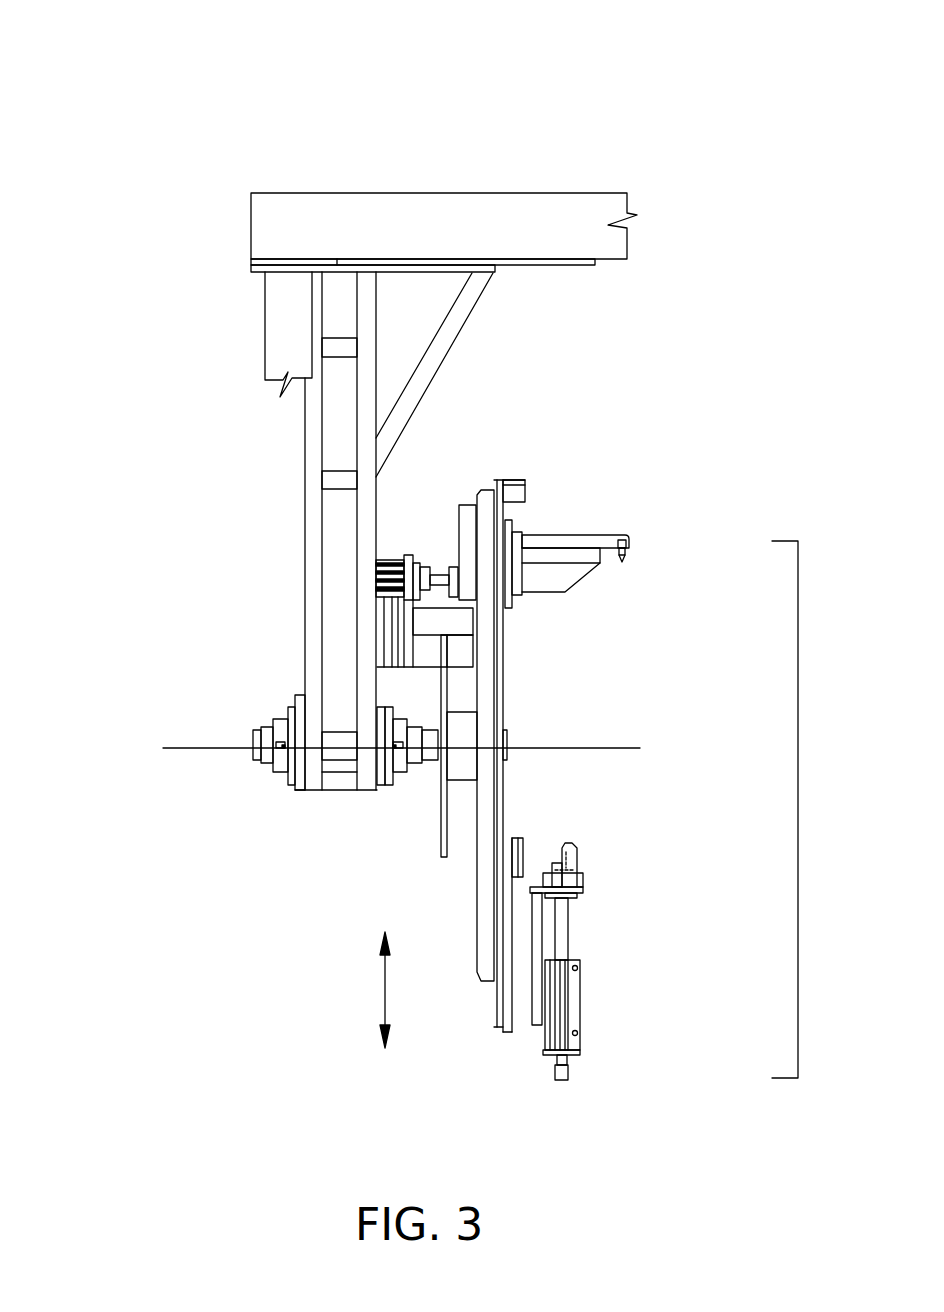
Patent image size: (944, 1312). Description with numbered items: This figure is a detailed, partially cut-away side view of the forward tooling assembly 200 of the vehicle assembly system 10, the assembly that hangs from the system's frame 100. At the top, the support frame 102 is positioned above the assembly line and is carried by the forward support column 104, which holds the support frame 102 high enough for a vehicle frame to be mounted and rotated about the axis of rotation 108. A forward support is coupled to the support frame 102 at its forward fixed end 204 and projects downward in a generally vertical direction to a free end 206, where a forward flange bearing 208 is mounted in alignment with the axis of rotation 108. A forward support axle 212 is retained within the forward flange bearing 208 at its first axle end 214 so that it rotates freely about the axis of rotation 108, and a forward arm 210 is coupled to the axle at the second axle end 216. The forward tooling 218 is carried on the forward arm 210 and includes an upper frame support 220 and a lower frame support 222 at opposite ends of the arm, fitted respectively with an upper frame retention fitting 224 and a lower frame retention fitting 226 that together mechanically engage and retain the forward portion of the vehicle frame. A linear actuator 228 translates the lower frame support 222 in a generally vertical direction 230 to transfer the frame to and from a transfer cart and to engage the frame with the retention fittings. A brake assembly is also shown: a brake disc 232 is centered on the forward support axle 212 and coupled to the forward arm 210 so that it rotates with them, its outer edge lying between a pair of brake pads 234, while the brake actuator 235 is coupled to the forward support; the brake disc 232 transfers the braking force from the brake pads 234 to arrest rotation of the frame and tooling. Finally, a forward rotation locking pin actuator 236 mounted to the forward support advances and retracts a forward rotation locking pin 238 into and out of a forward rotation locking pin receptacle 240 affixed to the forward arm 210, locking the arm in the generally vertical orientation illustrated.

The vehicle assembly system 10 is at (123, 115).
The hanging-style frame 100 is at (192, 204).
The support frame 102 is at (258, 212).
The forward support column 104 is at (278, 318).
The axis of rotation 108 is at (560, 748).
The forward tooling assembly 200 is at (148, 508).
The forward fixed end 204 is at (367, 317).
The free end 206 is at (313, 780).
The forward flange bearing 208 is at (282, 762).
The forward arm 210 is at (485, 685).
The forward support axle 212 is at (338, 753).
The first axle end 214 is at (255, 735).
The second axle end 216 is at (508, 758).
The forward tooling 218 is at (798, 786).
The upper frame support 220 is at (543, 547).
The lower frame support 222 is at (545, 935).
The upper frame retention fitting 224 is at (626, 562).
The lower frame retention fitting 226 is at (570, 855).
The linear actuator 228 is at (577, 1003).
The vertical direction 230 is at (385, 990).
The brake disc 232 is at (438, 840).
The brake pads 234 is at (455, 652).
The brake actuator 235 is at (448, 623).
The forward rotation locking pin actuator 236 is at (390, 557).
The forward rotation locking pin 238 is at (442, 573).
The forward rotation locking pin receptacle 240 is at (453, 573).